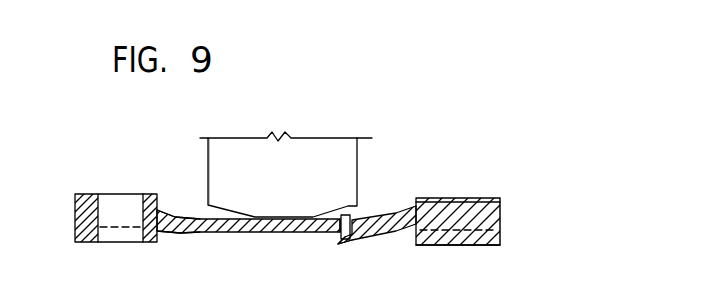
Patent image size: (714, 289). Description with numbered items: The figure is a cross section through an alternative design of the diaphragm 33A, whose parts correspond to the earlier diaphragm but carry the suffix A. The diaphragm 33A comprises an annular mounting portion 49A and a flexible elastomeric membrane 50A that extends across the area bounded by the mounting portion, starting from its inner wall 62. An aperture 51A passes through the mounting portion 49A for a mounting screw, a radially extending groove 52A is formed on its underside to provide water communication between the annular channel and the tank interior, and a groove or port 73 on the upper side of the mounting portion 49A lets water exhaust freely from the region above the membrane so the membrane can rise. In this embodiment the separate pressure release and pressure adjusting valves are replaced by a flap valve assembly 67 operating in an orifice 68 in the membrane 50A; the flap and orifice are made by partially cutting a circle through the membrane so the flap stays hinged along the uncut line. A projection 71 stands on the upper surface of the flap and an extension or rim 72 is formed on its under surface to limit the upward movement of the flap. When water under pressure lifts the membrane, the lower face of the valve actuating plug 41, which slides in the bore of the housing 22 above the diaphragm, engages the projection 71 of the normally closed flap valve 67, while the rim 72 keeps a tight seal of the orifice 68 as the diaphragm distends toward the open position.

The housing 22 is at (325, 155).
The valve actuating plug 41 is at (245, 158).
The aperture 51A is at (125, 207).
The inner wall of the mounting portion 62 is at (155, 210).
The membrane 50A is at (242, 230).
The orifice 68 is at (338, 236).
The projection 71 is at (345, 216).
The extension 72 is at (337, 244).
The flap valve assembly 67 is at (371, 220).
The groove 73 is at (462, 197).
The mounting portion 49A is at (492, 221).
The groove 52A is at (490, 243).
The diaphragm 33A is at (437, 187).